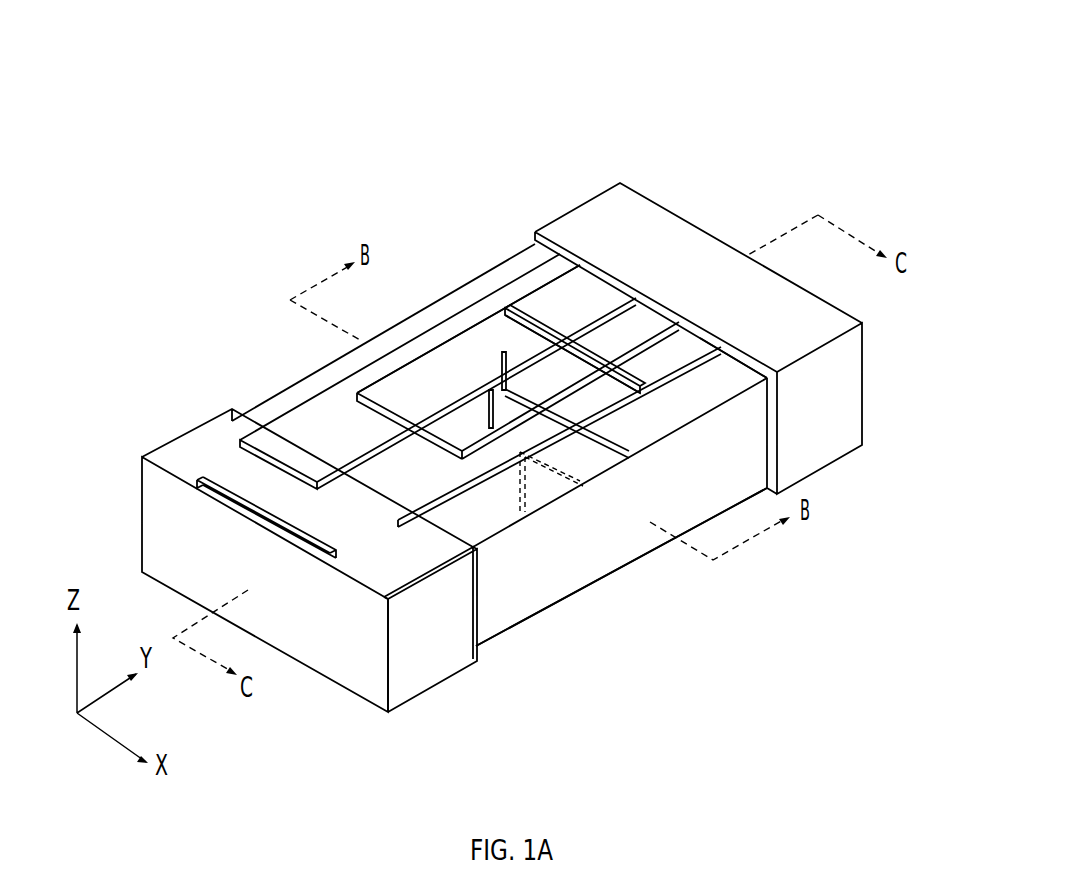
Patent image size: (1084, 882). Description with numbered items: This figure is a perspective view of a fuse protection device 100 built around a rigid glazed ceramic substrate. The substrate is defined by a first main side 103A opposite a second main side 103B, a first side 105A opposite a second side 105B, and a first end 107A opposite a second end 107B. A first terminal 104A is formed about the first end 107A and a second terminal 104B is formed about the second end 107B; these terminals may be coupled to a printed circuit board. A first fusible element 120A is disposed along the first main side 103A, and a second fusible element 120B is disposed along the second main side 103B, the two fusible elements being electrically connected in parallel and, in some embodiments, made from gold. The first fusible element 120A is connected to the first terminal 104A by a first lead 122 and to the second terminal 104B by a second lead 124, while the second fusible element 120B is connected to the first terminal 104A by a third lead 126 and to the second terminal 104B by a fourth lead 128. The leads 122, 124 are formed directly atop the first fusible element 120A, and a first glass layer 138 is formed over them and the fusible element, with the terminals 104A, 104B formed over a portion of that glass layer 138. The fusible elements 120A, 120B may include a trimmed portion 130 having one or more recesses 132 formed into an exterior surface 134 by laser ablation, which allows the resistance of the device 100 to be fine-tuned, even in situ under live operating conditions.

The fuse device 100 is at (340, 130).
The first main side 103A is at (282, 410).
The second main side 103B is at (517, 623).
The first terminal 104A is at (155, 550).
The second terminal 104B is at (643, 220).
The first side 105A is at (497, 268).
The second side 105B is at (602, 548).
The first end 107A is at (352, 694).
The second end 107B is at (872, 428).
The first fusible element 120A is at (585, 375).
The second fusible element 120B is at (520, 518).
The first lead 122 is at (224, 475).
The second lead 124 is at (650, 330).
The third lead 126 is at (414, 560).
The fourth lead 128 is at (737, 377).
The trimmed portion 130 is at (575, 428).
The recess 132 is at (488, 420).
The exterior surface 134 is at (568, 408).
The first glass layer 138 is at (470, 333).